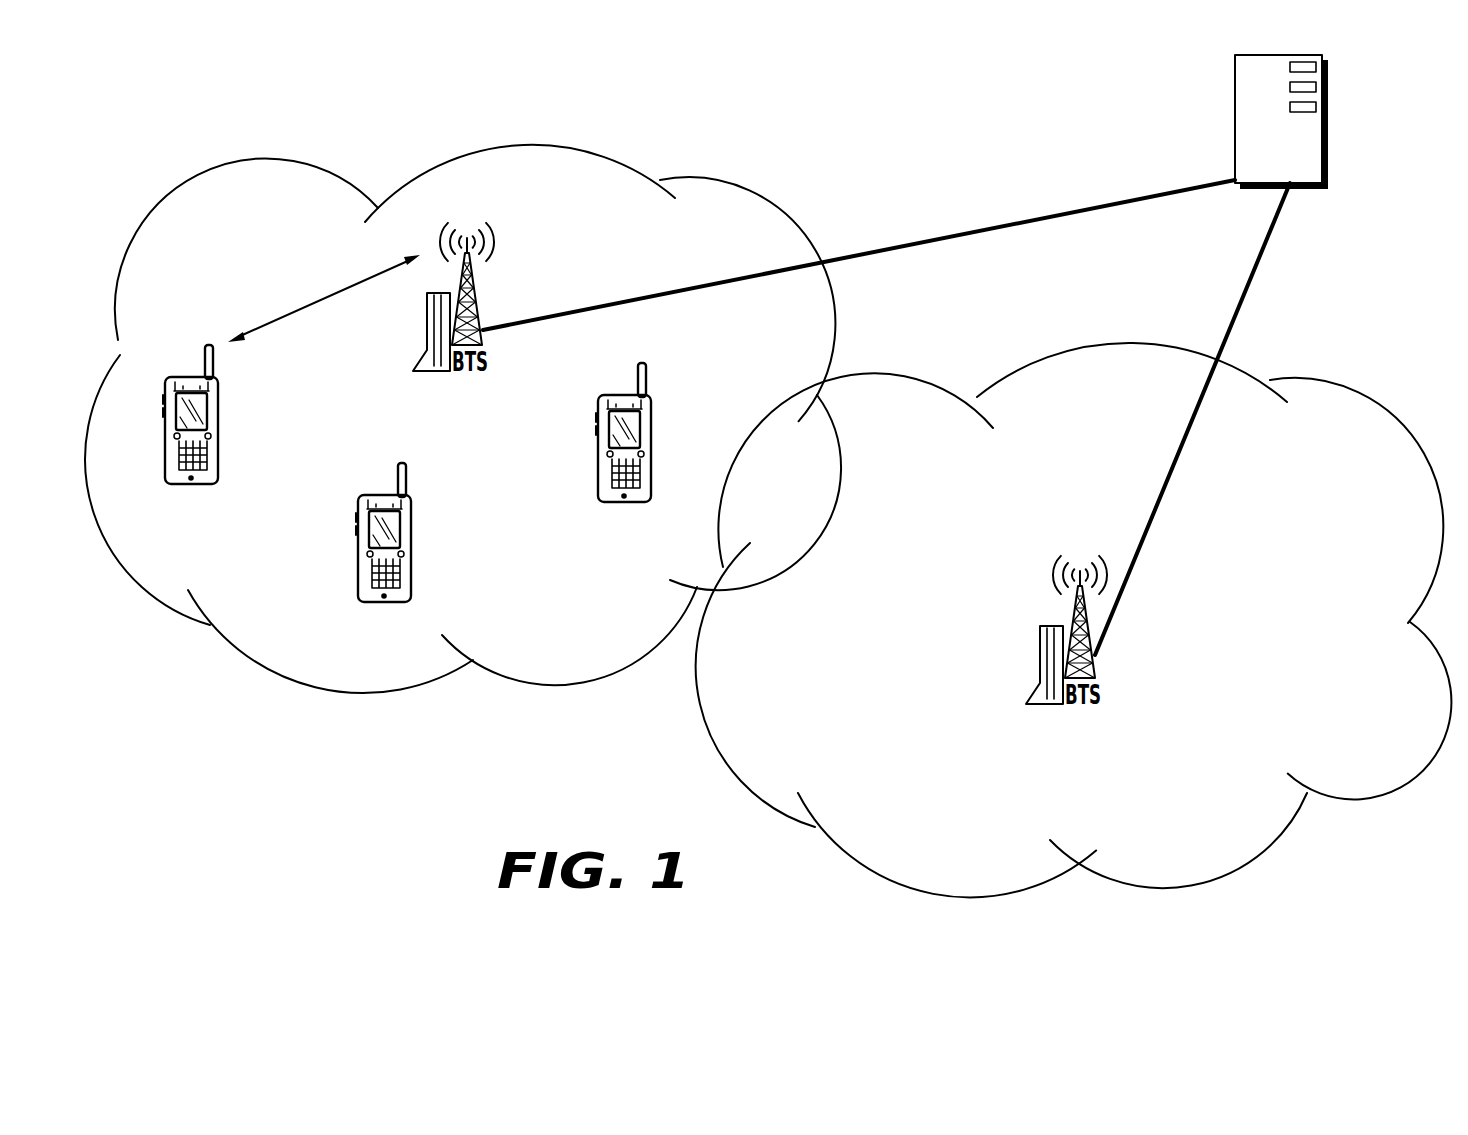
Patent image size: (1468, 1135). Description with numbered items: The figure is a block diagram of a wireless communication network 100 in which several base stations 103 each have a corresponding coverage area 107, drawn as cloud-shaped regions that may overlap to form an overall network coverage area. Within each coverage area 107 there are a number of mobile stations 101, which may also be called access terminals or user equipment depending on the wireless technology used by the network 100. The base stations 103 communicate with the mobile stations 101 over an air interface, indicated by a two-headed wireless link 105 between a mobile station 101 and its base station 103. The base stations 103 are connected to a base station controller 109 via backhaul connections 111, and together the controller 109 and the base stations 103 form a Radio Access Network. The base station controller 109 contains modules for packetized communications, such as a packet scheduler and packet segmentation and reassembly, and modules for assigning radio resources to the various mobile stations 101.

The communication network 100 is at (990, 192).
The mobile station 101 is at (165, 450).
The base station 103 is at (417, 357).
The wireless communication link 105 is at (318, 300).
The coverage area 107 is at (352, 695).
The base station controller 109 is at (1328, 87).
The backhaul connection 111 is at (1165, 195).